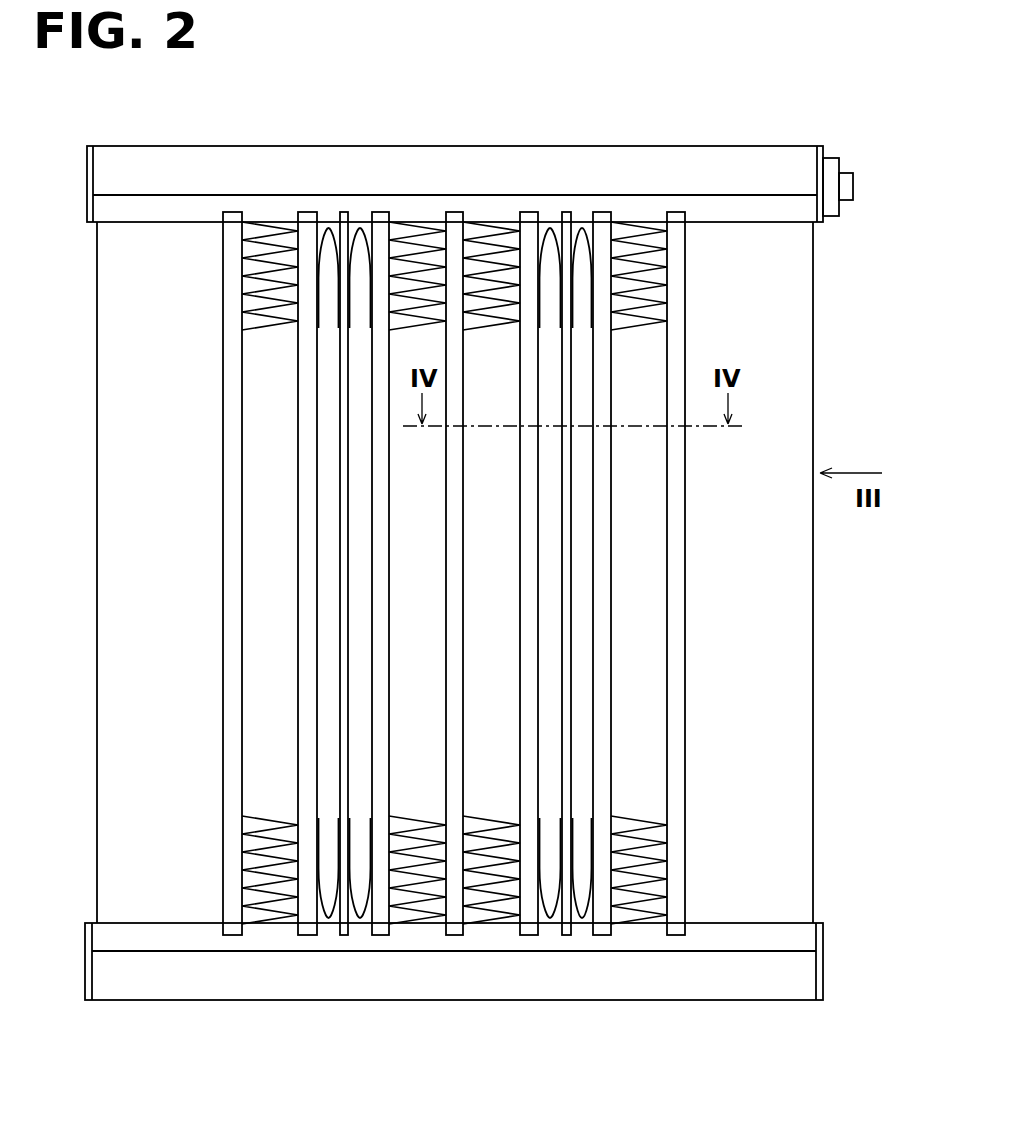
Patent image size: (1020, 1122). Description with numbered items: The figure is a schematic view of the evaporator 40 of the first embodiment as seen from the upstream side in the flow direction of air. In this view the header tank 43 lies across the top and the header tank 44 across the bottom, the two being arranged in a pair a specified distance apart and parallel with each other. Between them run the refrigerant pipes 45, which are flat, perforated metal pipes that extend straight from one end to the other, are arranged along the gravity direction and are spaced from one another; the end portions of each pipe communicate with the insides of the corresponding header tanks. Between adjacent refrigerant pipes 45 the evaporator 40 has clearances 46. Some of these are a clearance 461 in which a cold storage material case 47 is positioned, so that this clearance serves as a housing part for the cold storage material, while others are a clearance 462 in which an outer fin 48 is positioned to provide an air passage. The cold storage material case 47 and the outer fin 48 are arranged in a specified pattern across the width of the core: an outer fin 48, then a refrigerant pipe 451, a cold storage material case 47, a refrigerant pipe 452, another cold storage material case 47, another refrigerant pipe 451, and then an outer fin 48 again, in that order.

The evaporator 40 is at (816, 139).
The third header tank 43 is at (507, 168).
The fourth header tank 44 is at (272, 982).
The refrigerant pipe 45 is at (686, 640).
The refrigerant pipe 451 is at (603, 687).
The refrigerant pipe 452 is at (567, 728).
The clearance 46 is at (654, 926).
The clearance 461 is at (543, 920).
The clearance 462 is at (628, 860).
The cold storage material case 47 is at (543, 263).
The outer fin 48 is at (497, 310).